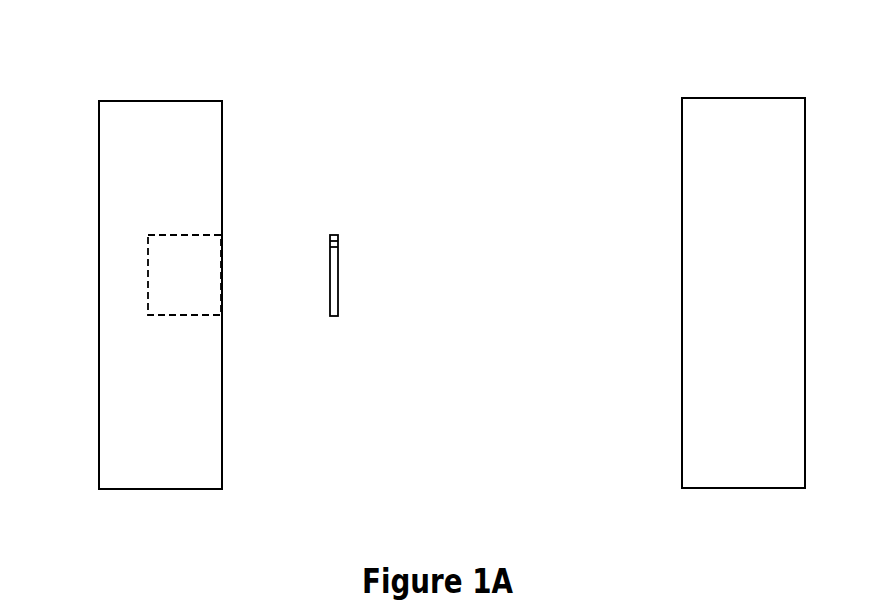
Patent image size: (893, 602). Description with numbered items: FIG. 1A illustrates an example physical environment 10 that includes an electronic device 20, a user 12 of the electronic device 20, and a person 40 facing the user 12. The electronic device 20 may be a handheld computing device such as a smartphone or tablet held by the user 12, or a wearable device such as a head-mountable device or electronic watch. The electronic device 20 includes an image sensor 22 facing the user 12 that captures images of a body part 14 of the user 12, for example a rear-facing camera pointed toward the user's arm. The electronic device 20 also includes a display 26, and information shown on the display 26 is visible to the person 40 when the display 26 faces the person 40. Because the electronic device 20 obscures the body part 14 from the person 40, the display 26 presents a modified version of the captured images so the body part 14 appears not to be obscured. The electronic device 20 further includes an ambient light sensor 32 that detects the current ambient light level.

The physical environment 10 is at (72, 36).
The user 12 is at (173, 479).
The body part 14 is at (197, 288).
The electronic device 20 is at (323, 221).
The image sensor 22 is at (338, 249).
The display 26 is at (334, 283).
The ambient light sensor 32 is at (338, 243).
The person 40 is at (757, 303).